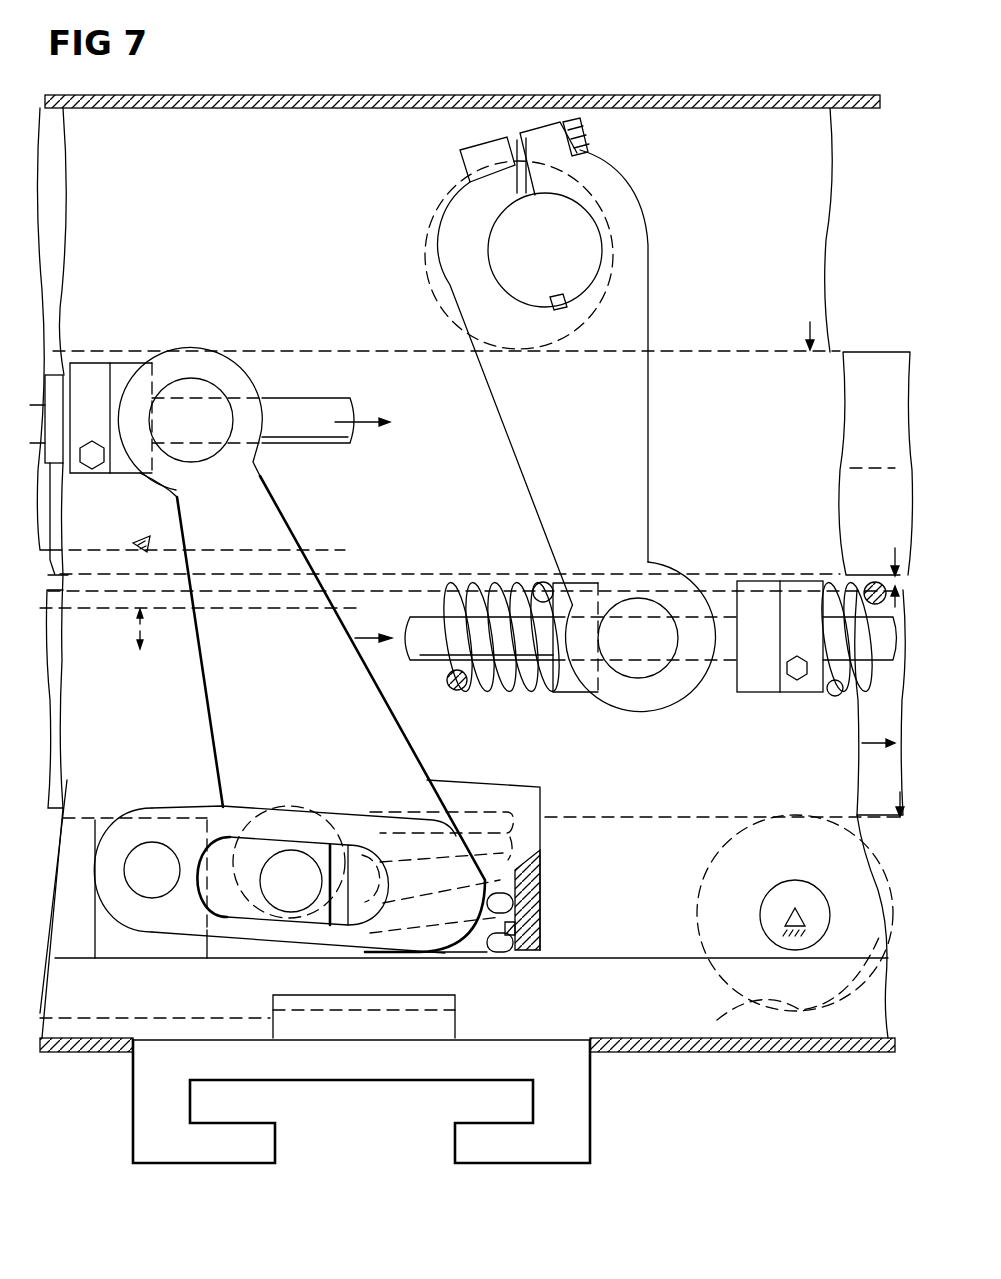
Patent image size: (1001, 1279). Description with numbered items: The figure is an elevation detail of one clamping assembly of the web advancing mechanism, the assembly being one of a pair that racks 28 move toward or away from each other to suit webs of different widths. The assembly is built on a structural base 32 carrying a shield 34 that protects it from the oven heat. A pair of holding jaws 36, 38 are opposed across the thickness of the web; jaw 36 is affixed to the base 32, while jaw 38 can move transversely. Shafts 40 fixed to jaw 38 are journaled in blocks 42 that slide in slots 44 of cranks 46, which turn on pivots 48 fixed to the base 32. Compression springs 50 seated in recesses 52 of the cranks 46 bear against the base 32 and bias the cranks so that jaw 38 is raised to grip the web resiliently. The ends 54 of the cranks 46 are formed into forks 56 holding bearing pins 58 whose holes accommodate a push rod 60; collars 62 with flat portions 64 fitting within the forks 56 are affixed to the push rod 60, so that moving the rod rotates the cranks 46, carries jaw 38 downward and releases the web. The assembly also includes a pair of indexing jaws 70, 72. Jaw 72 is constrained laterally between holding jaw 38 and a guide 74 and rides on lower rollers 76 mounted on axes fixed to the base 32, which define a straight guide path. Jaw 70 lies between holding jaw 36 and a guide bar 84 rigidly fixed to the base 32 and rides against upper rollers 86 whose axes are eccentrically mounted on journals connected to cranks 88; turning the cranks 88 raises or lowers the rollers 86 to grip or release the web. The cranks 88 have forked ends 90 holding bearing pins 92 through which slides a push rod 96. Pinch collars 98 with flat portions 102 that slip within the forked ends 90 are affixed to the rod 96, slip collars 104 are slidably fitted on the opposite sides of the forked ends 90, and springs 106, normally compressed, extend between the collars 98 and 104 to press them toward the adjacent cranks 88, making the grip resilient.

The rack 28 is at (453, 997).
The structural base 32 is at (628, 1052).
The shield 34 is at (256, 96).
The holding jaw 36 is at (65, 212).
The holding jaw 38 is at (70, 830).
The shaft 40 is at (306, 855).
The block 42 is at (318, 920).
The slot 44 is at (225, 912).
The crank 46 is at (280, 932).
The pivot 48 is at (150, 893).
The compression spring 50 is at (513, 955).
The recess 52 is at (542, 920).
The end of crank 54 is at (288, 693).
The fork 56 is at (192, 348).
The bearing pin 58 is at (215, 382).
The push rod 60 is at (292, 398).
The collar 62 is at (86, 364).
The flat portion 64 is at (130, 364).
The indexing jaw 70 is at (66, 338).
The indexing jaw 72 is at (56, 766).
The guide 74 is at (892, 1038).
The lower roller 76 is at (878, 928).
The guide bar 84 is at (822, 258).
The upper roller 86 is at (428, 238).
The crank 88 is at (592, 413).
The forked end 90 is at (642, 713).
The bearing pin 92 is at (632, 665).
The push rod 96 is at (715, 668).
The pinch collar 98 is at (806, 582).
The flat portion 102 is at (767, 582).
The slip collar 104 is at (566, 582).
The spring 106 is at (478, 694).